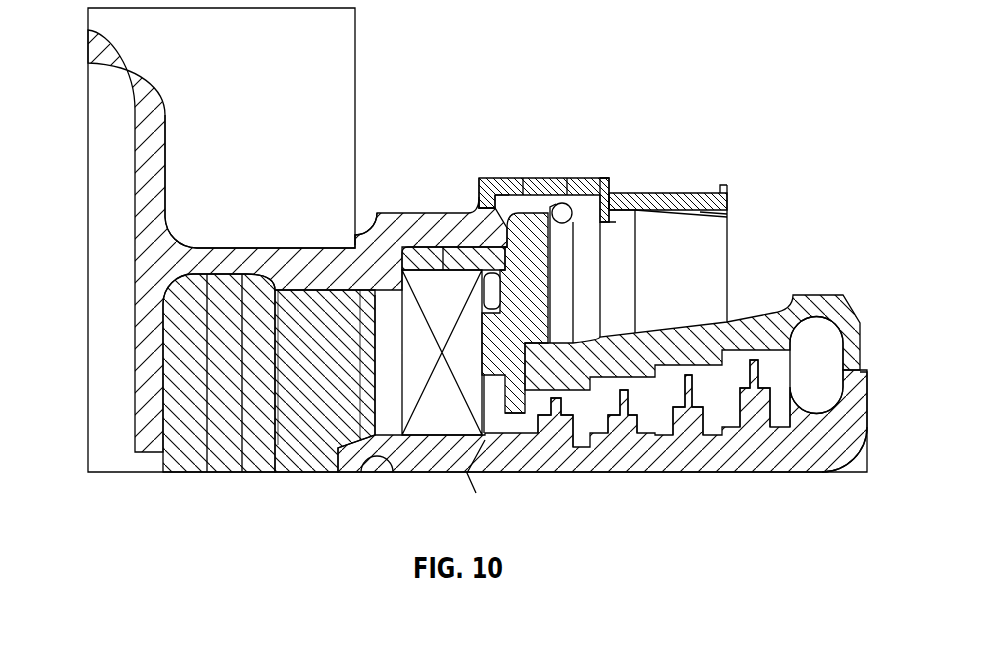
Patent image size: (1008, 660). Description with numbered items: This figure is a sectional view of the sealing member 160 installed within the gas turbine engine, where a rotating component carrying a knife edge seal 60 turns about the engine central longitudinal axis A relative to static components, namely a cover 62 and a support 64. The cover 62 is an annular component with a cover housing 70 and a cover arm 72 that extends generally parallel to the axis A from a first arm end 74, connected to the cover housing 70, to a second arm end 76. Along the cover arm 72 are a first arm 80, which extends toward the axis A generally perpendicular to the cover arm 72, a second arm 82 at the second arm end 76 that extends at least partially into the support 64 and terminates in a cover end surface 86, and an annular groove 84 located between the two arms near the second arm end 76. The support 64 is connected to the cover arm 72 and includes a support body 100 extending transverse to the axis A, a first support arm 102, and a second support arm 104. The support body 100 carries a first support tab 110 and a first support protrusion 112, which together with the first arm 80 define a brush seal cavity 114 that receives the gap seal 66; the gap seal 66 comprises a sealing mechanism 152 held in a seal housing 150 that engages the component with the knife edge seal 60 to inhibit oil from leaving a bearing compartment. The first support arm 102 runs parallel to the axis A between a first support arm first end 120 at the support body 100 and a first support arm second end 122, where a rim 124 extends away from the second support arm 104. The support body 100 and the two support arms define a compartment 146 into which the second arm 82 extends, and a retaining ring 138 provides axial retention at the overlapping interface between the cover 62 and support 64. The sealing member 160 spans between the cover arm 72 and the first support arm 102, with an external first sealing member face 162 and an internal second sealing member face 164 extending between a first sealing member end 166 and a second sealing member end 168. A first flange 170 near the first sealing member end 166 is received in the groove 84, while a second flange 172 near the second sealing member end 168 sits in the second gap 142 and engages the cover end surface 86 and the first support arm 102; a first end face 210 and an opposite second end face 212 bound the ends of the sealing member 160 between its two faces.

The knife edge seal 60 is at (714, 472).
The cover 62 is at (236, 140).
The support 64 is at (717, 331).
The gap seal 66 is at (389, 359).
The cover housing 70 is at (138, 52).
The cover arm 72 is at (330, 243).
The first arm end 74 is at (175, 245).
The second arm end 76 is at (603, 181).
The first arm 80 is at (380, 303).
The second arm 82 is at (577, 226).
The groove 84 is at (493, 208).
The cover end surface 86 is at (609, 242).
The support body 100 is at (523, 335).
The first support arm 102 is at (718, 191).
The second support arm 104 is at (698, 345).
The first support tab 110 is at (410, 262).
The first support protrusion 112 is at (485, 365).
The brush seal cavity 114 is at (515, 313).
The first support arm first end 120 is at (507, 180).
The first support arm second end 122 is at (726, 192).
The rim 124 is at (739, 196).
The retaining ring 138 is at (540, 300).
The second gap 142 is at (711, 214).
The compartment 146 is at (743, 207).
The seal housing 150 is at (399, 403).
The sealing mechanism 152 is at (437, 420).
The sealing member 160 is at (568, 134).
The first sealing member face 162 is at (566, 185).
The second sealing member face 164 is at (529, 180).
The first sealing member end 166 is at (489, 180).
The second sealing member end 168 is at (612, 193).
The first flange 170 is at (476, 201).
The second flange 172 is at (613, 222).
The first end face 210 is at (478, 186).
The second end face 212 is at (628, 182).
The engine central longitudinal axis A is at (836, 470).